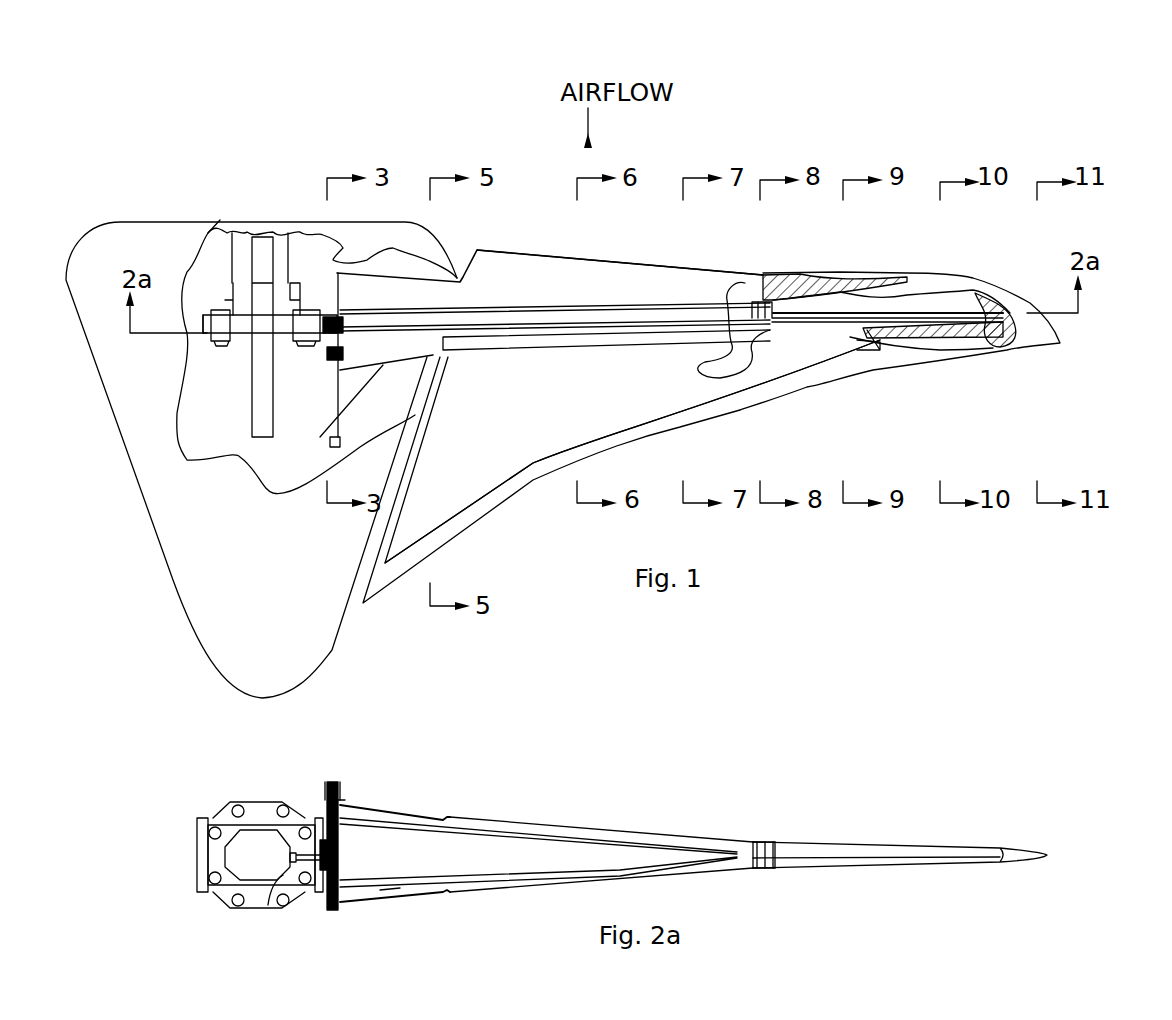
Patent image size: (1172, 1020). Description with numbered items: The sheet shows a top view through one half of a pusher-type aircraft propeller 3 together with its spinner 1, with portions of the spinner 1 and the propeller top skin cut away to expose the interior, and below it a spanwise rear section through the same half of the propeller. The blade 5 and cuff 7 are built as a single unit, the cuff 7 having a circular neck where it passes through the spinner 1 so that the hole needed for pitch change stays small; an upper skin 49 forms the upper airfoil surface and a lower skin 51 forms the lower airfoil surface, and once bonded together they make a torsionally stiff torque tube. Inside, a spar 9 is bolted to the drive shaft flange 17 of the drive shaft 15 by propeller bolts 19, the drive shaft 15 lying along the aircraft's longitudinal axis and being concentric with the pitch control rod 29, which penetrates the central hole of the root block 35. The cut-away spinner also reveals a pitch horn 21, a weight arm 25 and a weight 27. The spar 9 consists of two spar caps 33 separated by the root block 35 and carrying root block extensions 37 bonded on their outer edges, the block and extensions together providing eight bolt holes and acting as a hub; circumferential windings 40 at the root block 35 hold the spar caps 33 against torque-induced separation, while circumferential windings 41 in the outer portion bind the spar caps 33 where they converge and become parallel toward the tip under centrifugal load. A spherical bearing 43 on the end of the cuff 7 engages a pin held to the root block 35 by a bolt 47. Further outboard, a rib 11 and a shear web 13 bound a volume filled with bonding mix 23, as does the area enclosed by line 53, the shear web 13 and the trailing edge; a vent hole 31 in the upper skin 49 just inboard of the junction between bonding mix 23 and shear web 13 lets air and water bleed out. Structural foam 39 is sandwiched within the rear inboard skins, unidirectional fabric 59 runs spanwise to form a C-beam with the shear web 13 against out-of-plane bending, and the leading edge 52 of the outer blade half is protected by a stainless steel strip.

In FIG. 1, the spinner 1 is at (405, 222).
In FIG. 1, the pusher-type aircraft propeller 3 is at (516, 249).
In FIG. 2A, the pusher-type aircraft propeller 3 is at (423, 811).
In FIG. 1, the blade 5 is at (603, 270).
In FIG. 2A, the blade 5 is at (487, 820).
In FIG. 2A, the cuff 7 is at (348, 803).
In FIG. 1, the spar 9 is at (652, 300).
In FIG. 2A, the spar 9 is at (462, 895).
In FIG. 1, the rib 11 is at (752, 300).
In FIG. 2A, the rib 11 is at (757, 870).
In FIG. 1, the shear web 13 is at (740, 345).
In FIG. 1, the drive shaft 15 is at (220, 221).
In FIG. 1, the drive shaft flange 17 is at (233, 297).
In FIG. 1, the propeller bolts 19 is at (222, 346).
In FIG. 1, the pitch horn 21 is at (333, 358).
In FIG. 1, the bonding mix 23 is at (800, 278).
In FIG. 1, the weight arm 25 is at (338, 415).
In FIG. 1, the weight 27 is at (330, 445).
In FIG. 1, the pitch control rod 29 is at (252, 418).
In FIG. 1, the vent hole 31 is at (870, 325).
In FIG. 2A, the spar caps 33 is at (403, 895).
In FIG. 2A, the root block 35 is at (242, 840).
In FIG. 2A, the root block extensions 37 is at (232, 806).
In FIG. 1, the structural foam 39 is at (732, 405).
In FIG. 2A, the circumferential windings 40 is at (318, 820).
In FIG. 2A, the circumferential windings 41 is at (778, 870).
In FIG. 2A, the spherical bearing 43 is at (340, 867).
In FIG. 2A, the bolt 47 is at (270, 905).
In FIG. 2A, the upper skin 49 is at (640, 830).
In FIG. 2A, the lower skin 51 is at (680, 875).
In FIG. 1, the leading edge 52 is at (860, 268).
In FIG. 1, the line 53 is at (828, 378).
In FIG. 2A, the unidirectional fabric 59 is at (333, 910).